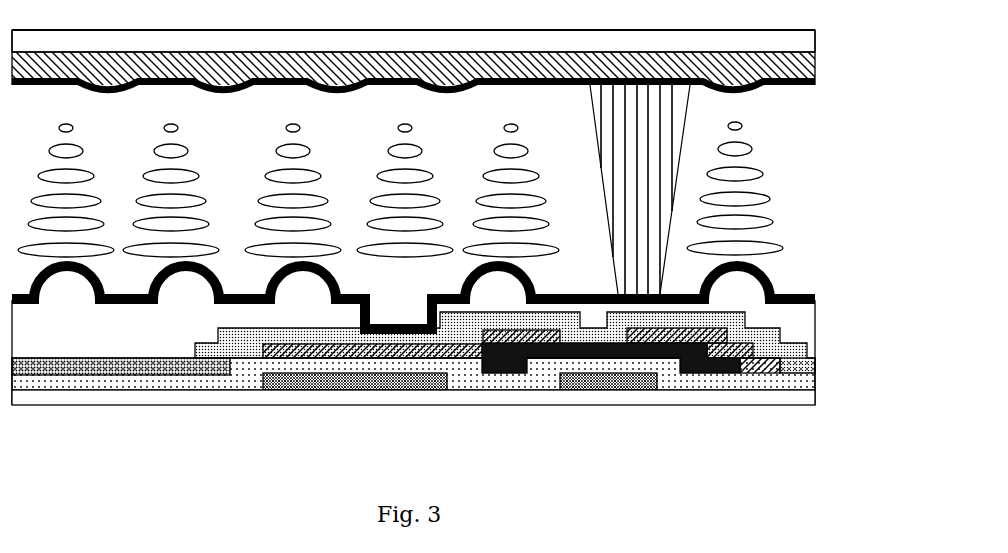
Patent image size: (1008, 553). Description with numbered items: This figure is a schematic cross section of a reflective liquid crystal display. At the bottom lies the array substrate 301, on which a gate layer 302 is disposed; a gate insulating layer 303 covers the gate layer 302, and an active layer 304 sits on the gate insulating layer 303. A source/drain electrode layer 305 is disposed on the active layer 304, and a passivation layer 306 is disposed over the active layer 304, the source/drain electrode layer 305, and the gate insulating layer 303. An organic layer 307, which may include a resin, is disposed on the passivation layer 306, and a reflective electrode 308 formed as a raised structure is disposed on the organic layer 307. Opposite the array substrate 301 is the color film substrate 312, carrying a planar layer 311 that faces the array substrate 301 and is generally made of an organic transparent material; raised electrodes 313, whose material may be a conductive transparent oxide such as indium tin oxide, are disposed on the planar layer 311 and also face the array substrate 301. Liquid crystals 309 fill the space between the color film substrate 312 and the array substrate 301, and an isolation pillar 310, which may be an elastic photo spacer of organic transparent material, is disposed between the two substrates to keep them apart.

The array substrate 301 is at (780, 397).
The gate layer 302 is at (473, 416).
The gate insulating layer 303 is at (413, 409).
The active layer 304 is at (638, 405).
The source/drain electrode layer 305 is at (732, 351).
The passivation layer 306 is at (128, 407).
The organic layer 307 is at (780, 312).
The reflective electrode 308 is at (765, 270).
The liquid crystals 309 is at (732, 222).
The isolation pillar 310 is at (642, 177).
The planar layer 311 is at (792, 70).
The color film substrate 312 is at (795, 43).
The raised electrode 313 is at (743, 92).